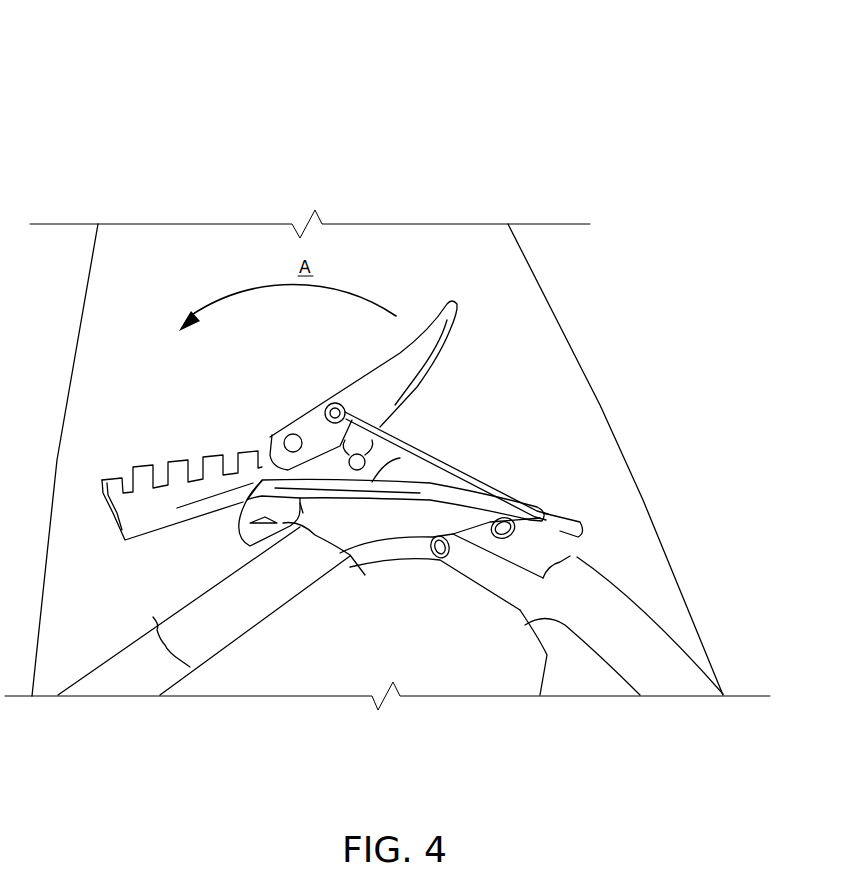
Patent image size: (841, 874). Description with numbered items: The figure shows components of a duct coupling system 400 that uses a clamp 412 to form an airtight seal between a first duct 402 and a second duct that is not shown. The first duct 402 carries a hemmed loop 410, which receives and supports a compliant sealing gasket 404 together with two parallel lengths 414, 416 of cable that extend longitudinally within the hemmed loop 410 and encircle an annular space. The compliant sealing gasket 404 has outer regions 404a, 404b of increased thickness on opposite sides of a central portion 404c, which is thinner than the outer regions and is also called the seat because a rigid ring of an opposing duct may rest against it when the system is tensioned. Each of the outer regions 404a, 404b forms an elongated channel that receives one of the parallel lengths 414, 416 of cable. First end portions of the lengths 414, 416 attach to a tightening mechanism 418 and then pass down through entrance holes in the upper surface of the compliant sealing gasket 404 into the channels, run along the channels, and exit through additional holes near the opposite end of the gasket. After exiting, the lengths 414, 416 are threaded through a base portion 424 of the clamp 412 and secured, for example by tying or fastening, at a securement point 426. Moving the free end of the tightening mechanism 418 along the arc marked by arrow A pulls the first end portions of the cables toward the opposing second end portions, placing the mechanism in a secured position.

The duct coupling system 400 is at (131, 73).
The first duct 402 is at (529, 338).
The compliant sealing gasket 404 is at (558, 559).
The outer region 404a is at (548, 568).
The outer region 404b is at (455, 560).
The central portion 404c is at (487, 550).
The hemmed loop 410 is at (163, 643).
The clamp 412 is at (446, 372).
The parallel length of cable 414 is at (485, 478).
The parallel length of cable 416 is at (397, 460).
The tightening mechanism 418 is at (380, 390).
The base portion 424 is at (273, 460).
The securement point 426 is at (340, 417).